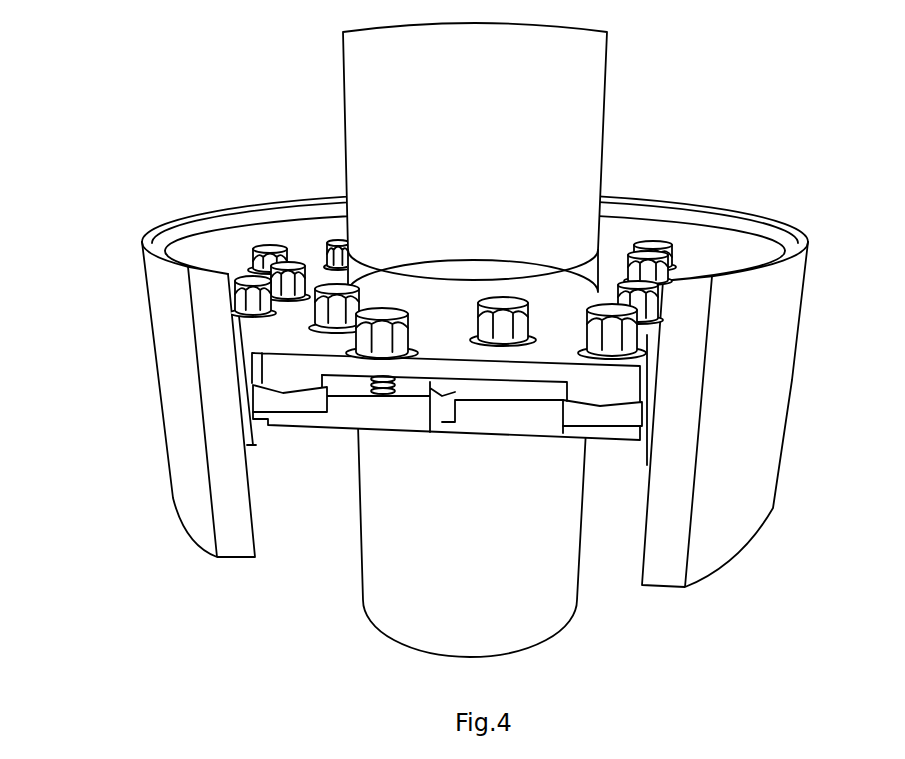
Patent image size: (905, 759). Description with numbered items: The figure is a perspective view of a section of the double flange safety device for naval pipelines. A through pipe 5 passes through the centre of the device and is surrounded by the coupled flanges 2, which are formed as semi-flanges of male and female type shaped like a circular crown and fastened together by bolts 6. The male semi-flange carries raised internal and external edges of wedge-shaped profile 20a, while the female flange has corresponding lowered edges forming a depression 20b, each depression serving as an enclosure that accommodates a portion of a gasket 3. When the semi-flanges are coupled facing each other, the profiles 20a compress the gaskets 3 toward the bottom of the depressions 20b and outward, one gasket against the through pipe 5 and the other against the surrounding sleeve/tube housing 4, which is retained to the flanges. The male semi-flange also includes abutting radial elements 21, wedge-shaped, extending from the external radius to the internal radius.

The flange 2 is at (504, 360).
The gasket 3 is at (431, 422).
The sleeve/tube housing 4 is at (151, 366).
The through pipe 5 is at (572, 125).
The bolts 6 is at (354, 295).
The wedge-shaped profile 20a is at (600, 462).
The depression 20b is at (287, 414).
The abutting radial element 21 is at (478, 354).